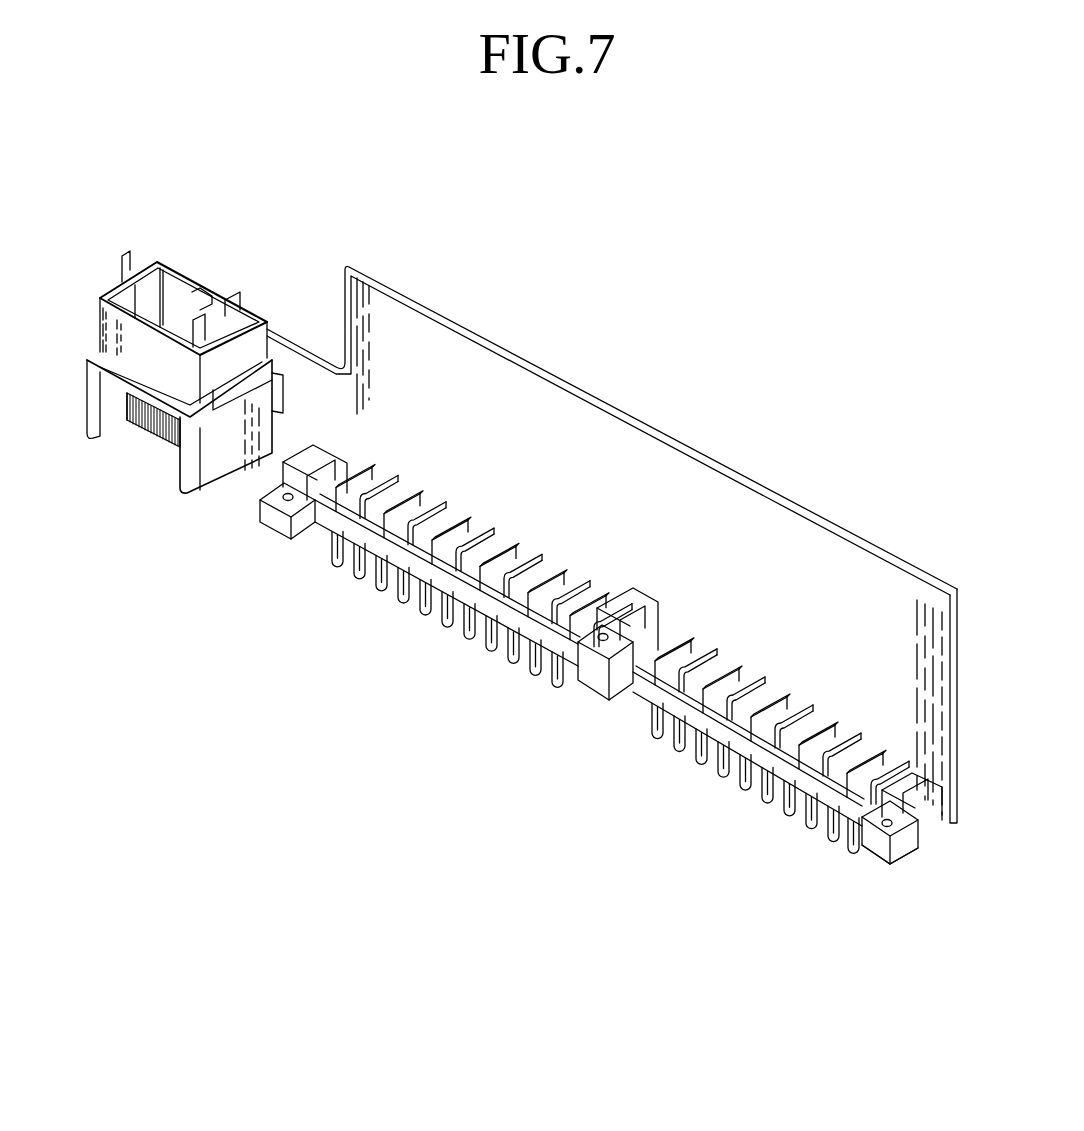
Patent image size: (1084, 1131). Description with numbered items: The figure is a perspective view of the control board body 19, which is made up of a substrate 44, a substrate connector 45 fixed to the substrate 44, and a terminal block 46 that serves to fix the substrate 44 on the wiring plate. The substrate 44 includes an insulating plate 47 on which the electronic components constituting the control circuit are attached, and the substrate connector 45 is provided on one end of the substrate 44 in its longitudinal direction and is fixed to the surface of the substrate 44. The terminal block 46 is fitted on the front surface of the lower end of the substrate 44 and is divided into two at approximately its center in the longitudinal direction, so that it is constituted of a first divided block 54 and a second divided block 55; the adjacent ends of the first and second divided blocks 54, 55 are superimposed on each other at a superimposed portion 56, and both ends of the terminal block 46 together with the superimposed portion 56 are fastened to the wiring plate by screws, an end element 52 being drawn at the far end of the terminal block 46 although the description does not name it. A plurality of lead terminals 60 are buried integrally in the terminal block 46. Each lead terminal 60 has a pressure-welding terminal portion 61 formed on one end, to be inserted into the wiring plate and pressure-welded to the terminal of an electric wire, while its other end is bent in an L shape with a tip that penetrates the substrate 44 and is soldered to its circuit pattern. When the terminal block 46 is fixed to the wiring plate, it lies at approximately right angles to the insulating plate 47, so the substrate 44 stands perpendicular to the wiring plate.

The control board body 19 is at (612, 527).
The substrate 44 is at (428, 358).
The substrate connector 45 is at (272, 322).
The terminal block 46 is at (875, 870).
The insulating plate 47 is at (766, 510).
The block 52 is at (905, 845).
The first divided block 54 is at (810, 782).
The second divided block 55 is at (497, 606).
The superimposed portion 56 is at (620, 697).
The lead terminal 60 is at (465, 525).
The pressure-welding terminal portion 61 is at (453, 632).